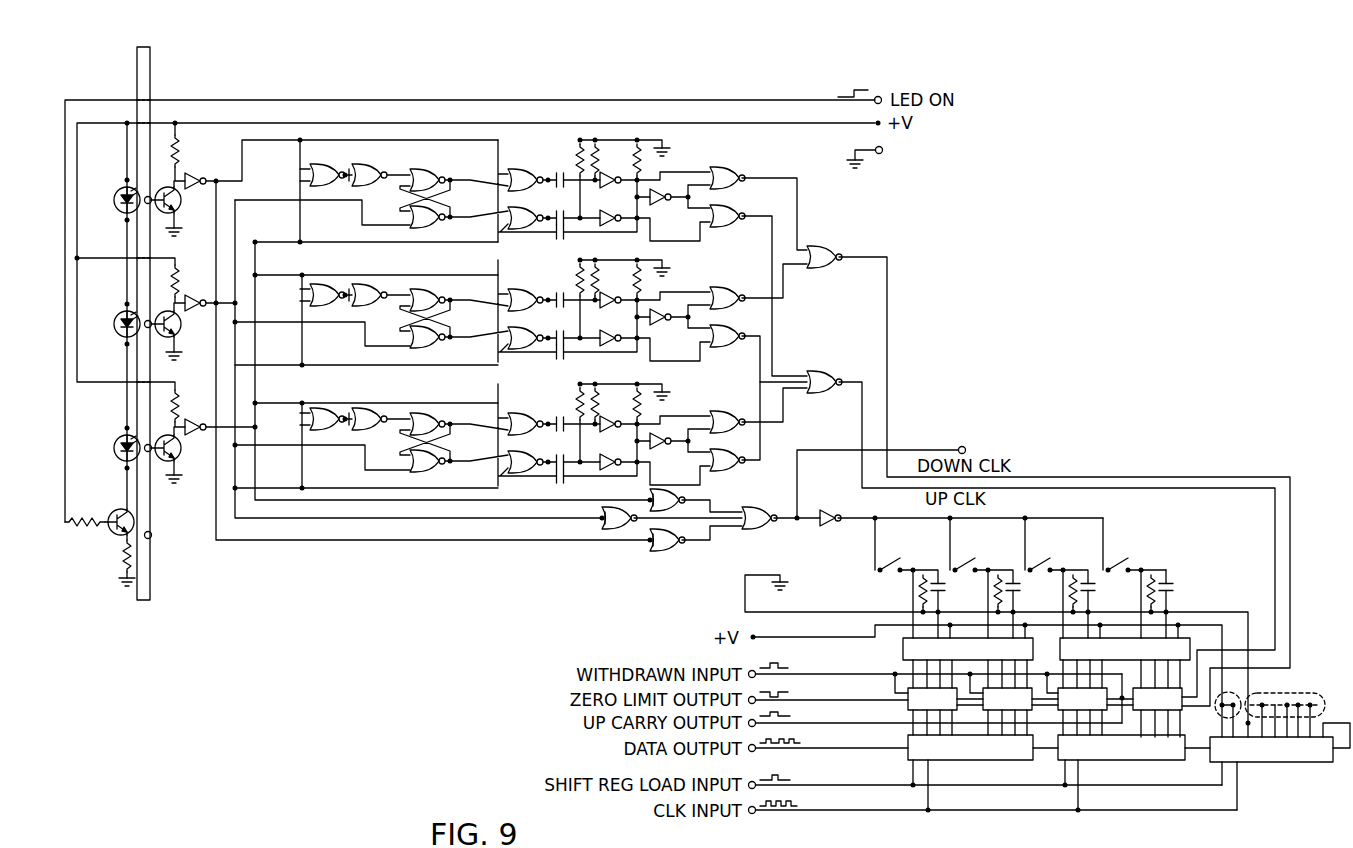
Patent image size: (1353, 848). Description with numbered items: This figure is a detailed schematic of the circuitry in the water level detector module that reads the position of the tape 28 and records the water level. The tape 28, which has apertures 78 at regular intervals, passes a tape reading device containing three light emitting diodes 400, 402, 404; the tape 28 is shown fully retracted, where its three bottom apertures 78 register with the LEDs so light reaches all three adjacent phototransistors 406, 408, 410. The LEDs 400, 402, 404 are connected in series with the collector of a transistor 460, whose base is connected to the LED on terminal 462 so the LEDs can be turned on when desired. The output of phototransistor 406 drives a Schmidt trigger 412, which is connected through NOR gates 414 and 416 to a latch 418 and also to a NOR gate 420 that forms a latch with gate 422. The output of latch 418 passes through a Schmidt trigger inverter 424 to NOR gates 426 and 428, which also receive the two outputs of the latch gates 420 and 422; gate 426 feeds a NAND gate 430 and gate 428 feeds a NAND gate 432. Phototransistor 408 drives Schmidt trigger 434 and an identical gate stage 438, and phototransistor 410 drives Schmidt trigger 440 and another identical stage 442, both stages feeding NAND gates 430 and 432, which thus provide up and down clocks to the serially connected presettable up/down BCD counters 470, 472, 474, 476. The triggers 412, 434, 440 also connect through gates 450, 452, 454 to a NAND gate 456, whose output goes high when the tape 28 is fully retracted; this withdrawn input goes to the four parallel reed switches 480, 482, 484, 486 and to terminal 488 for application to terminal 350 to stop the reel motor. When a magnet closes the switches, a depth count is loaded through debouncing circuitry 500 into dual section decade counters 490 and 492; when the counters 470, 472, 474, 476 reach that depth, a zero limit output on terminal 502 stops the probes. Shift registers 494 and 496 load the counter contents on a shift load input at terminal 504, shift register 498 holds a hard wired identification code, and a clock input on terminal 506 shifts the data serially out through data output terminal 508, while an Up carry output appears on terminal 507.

The tape 28 is at (154, 74).
The apertures 78 is at (145, 196).
The terminal 350 is at (756, 670).
The light emitting diode 400 is at (114, 205).
The light emitting diode 402 is at (114, 329).
The light emitting diode 404 is at (114, 453).
The phototransistor 406 is at (182, 207).
The phototransistor 408 is at (182, 331).
The phototransistor 410 is at (172, 465).
The Schmidt trigger 412 is at (190, 172).
The NOR gate 414 is at (310, 176).
The NOR gate 416 is at (372, 165).
The latch 418 is at (452, 186).
The NOR gate 420 is at (520, 172).
The gate 422 is at (488, 232).
The Schmidt trigger inverter 424 is at (660, 201).
The NOR gate 426 is at (726, 172).
The NOR gate 428 is at (745, 212).
The NAND gate 430 is at (838, 252).
The NAND gate 432 is at (824, 376).
The Schmidt trigger 434 is at (190, 294).
The gate stage 438 is at (408, 272).
The Schmidt trigger 440 is at (192, 437).
The gate stage 442 is at (405, 395).
The gate 450 is at (688, 496).
The gate 452 is at (608, 528).
The gate 454 is at (672, 548).
The NAND gate 456 is at (770, 528).
The transistor 460 is at (116, 536).
The LED on terminal 462 is at (878, 96).
The presettable up/down BCD counter 470 is at (932, 699).
The presettable up/down BCD counter 472 is at (1007, 699).
The presettable up/down BCD counter 474 is at (1082, 699).
The presettable up/down BCD counter 476 is at (1157, 699).
The reed switch 480 is at (885, 566).
The reed switch 482 is at (960, 566).
The reed switch 484 is at (1033, 566).
The reed switch 486 is at (1128, 566).
The terminal 488 is at (962, 445).
The dual section decade counter 490 is at (968, 649).
The dual section decade counter 492 is at (1125, 649).
The shift register 494 is at (970, 747).
The shift register 496 is at (1121, 747).
The shift register 498 is at (1271, 749).
The debouncing circuitry 500 is at (1170, 582).
The terminal 502 is at (756, 697).
The terminal 504 is at (756, 782).
The terminal 506 is at (756, 813).
The terminal 507 is at (756, 720).
The data output terminal 508 is at (756, 745).